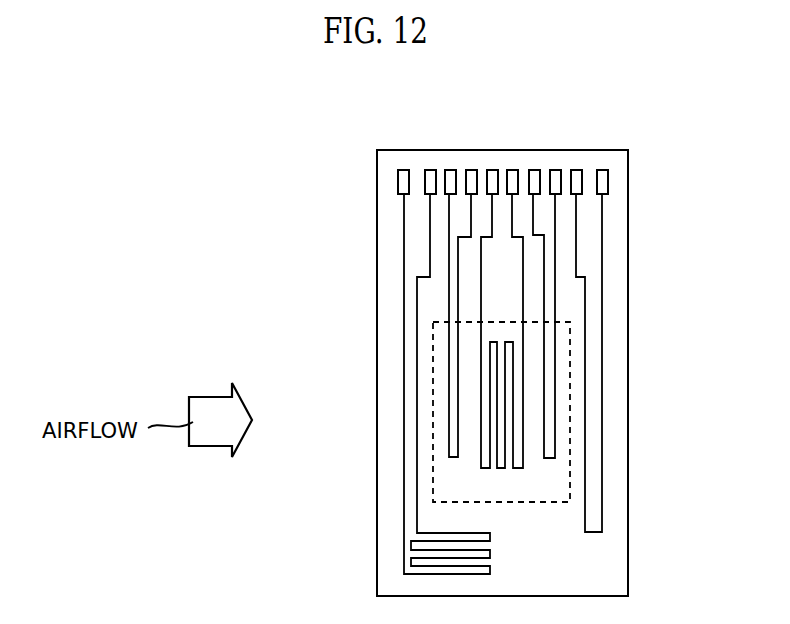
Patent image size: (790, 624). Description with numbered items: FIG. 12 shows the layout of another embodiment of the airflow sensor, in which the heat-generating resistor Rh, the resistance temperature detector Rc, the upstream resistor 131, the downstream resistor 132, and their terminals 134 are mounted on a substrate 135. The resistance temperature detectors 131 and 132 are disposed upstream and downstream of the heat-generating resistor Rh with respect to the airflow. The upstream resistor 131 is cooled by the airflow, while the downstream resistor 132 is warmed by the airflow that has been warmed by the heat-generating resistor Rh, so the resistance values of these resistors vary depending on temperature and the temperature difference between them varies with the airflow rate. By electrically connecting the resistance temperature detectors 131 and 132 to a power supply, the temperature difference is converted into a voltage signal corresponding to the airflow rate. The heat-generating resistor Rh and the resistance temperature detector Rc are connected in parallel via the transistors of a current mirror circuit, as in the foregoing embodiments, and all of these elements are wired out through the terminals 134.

The upstream resistor 131 is at (448, 363).
The downstream resistor 132 is at (555, 352).
The terminals 134 is at (603, 170).
The substrate 135 is at (630, 237).
The heat-generating resistor Rh is at (500, 447).
The resistance temperature detector Rc is at (415, 549).